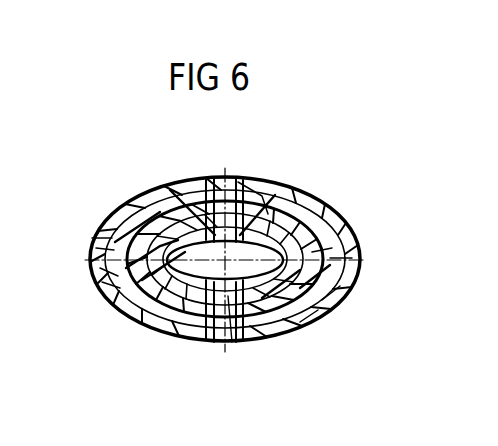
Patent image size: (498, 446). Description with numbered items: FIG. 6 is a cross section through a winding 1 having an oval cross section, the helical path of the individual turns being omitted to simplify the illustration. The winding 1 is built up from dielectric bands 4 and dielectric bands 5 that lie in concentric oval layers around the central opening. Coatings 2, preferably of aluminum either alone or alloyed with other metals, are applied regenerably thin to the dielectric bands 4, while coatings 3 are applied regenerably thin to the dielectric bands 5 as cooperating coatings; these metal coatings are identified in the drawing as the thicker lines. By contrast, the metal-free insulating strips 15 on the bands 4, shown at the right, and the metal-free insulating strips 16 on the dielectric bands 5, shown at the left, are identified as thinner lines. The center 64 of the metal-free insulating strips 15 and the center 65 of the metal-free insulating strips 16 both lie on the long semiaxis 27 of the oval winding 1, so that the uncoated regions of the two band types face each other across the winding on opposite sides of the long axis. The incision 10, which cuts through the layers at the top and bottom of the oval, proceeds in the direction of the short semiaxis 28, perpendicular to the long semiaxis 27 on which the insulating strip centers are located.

The winding 1 is at (359, 210).
The coating 2 is at (162, 196).
The coating 3 is at (268, 207).
The dielectric band 4 is at (187, 215).
The dielectric band 5 is at (206, 218).
The incision 10 is at (222, 178).
The metal-free insulating strip 15 is at (345, 288).
The metal-free insulating strip 16 is at (97, 234).
The long semiaxis 27 is at (242, 330).
The short semiaxis 28 is at (232, 180).
The center of the metal-free insulating strip 64 is at (352, 260).
The center of the metal-free insulating strip 65 is at (102, 274).